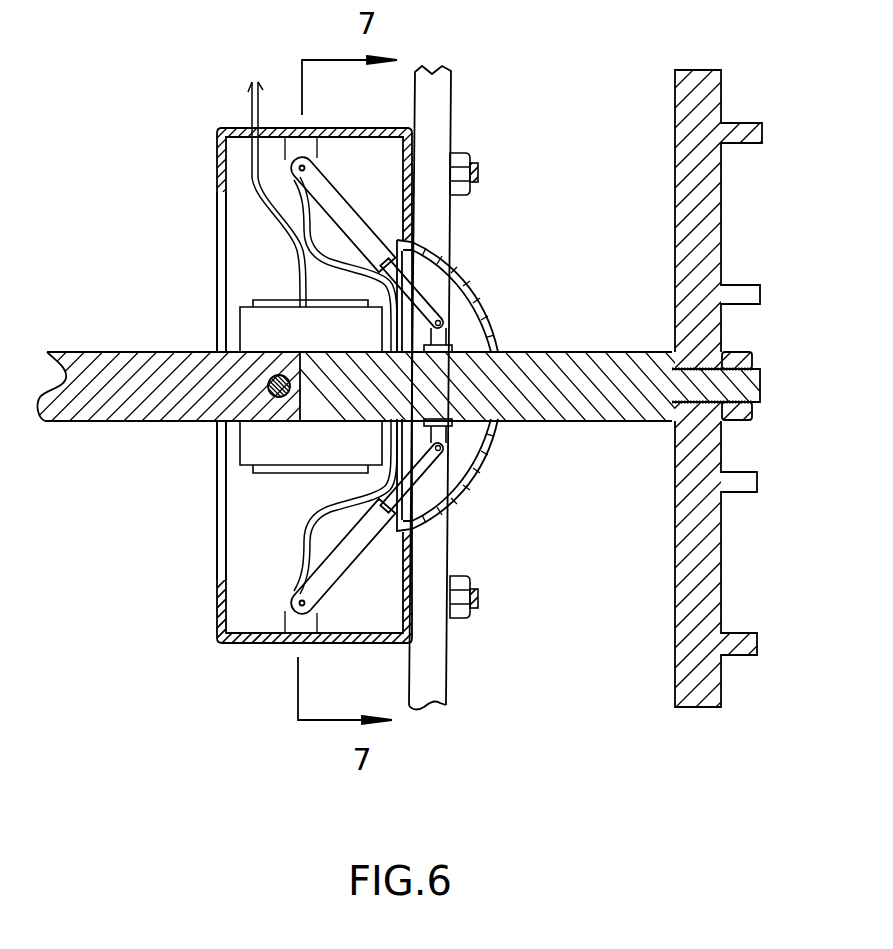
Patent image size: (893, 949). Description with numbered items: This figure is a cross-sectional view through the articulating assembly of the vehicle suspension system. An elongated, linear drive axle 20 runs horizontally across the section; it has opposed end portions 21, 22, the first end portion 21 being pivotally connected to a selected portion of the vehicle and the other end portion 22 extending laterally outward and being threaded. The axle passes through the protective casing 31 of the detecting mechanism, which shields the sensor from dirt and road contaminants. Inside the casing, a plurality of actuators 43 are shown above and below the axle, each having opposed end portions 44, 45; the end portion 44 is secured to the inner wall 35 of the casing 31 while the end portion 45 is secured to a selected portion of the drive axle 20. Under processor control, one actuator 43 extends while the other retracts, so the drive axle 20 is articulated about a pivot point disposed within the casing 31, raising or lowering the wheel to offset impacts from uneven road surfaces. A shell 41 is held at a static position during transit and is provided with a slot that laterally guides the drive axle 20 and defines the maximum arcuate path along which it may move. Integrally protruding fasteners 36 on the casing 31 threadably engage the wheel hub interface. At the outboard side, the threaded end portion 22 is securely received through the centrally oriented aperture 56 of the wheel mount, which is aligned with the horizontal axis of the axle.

The drive axle 20 is at (598, 352).
The end portion 21 is at (53, 352).
The end portion 22 is at (762, 385).
The protective casing 31 is at (218, 160).
The inner wall 35 is at (228, 258).
The fasteners 36 is at (474, 167).
The shell 41 is at (476, 478).
The actuators 43 is at (353, 205).
The end portion 44 is at (293, 160).
The end portion 45 is at (443, 323).
The aperture 56 is at (712, 345).